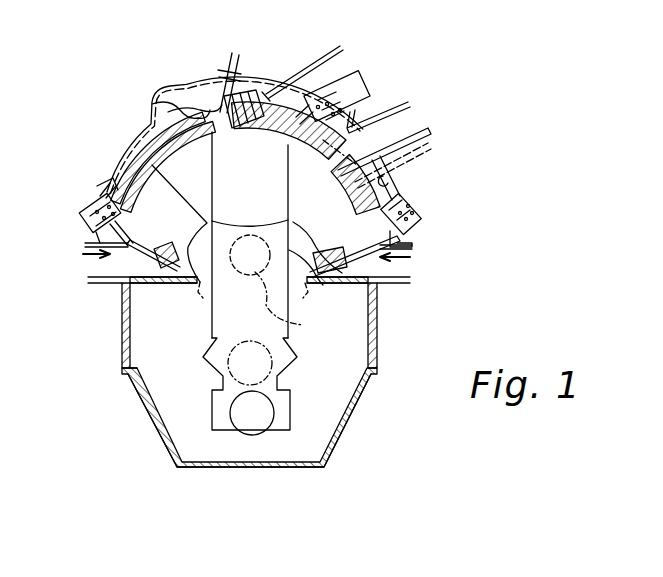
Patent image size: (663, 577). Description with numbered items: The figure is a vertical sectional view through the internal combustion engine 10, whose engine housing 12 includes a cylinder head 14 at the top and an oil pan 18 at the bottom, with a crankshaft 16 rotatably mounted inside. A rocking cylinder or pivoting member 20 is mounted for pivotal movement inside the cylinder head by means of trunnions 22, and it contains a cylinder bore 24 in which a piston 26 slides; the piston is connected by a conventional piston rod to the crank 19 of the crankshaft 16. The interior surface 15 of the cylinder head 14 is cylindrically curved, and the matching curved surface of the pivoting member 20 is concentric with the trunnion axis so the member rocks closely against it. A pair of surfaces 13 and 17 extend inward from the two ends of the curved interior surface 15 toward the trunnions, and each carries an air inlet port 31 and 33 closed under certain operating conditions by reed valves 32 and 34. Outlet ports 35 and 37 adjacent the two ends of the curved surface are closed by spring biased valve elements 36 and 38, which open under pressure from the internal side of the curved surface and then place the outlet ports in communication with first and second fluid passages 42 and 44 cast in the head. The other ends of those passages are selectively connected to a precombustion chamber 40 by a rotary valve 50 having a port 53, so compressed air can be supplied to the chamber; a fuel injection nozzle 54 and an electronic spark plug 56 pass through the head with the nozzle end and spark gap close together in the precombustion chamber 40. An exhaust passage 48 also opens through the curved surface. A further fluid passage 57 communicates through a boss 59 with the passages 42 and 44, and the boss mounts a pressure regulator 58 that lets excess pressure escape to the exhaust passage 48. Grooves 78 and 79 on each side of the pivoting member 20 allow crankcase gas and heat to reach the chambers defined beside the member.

The internal combustion engine 10 is at (460, 165).
The engine housing 12 is at (122, 288).
The surface 13 is at (223, 208).
The cylinder head 14 is at (113, 190).
The interior surface 15 is at (150, 190).
The crankshaft 16 is at (265, 372).
The surface 17 is at (352, 210).
The oil pan 18 is at (333, 436).
The crank 19 is at (247, 422).
The pivoting member 20 is at (152, 139).
The trunnions 22 is at (279, 288).
The cylinder bore 24 is at (392, 193).
The piston 26 is at (220, 312).
The air inlet port 31 is at (90, 257).
The reed valve 32 is at (122, 272).
The air inlet port 33 is at (412, 255).
The reed valve 34 is at (350, 266).
The outlet port 35 is at (146, 200).
The spring biased valve element 36 is at (84, 213).
The outlet port 37 is at (372, 216).
The spring biased valve element 38 is at (422, 210).
The precombustion chamber 40 is at (224, 140).
The first fluid passage 42 is at (107, 194).
The second fluid passage 44 is at (397, 170).
The exhaust passage 48 is at (406, 124).
The rotary valve 50 is at (190, 100).
The port 53 is at (222, 108).
The fuel injection nozzle 54 is at (240, 58).
The electronic spark plug 56 is at (266, 92).
The fluid passage 57 is at (360, 110).
The pressure regulator 58 is at (366, 72).
The boss 59 is at (327, 75).
The groove 78 is at (196, 290).
The groove 79 is at (307, 290).